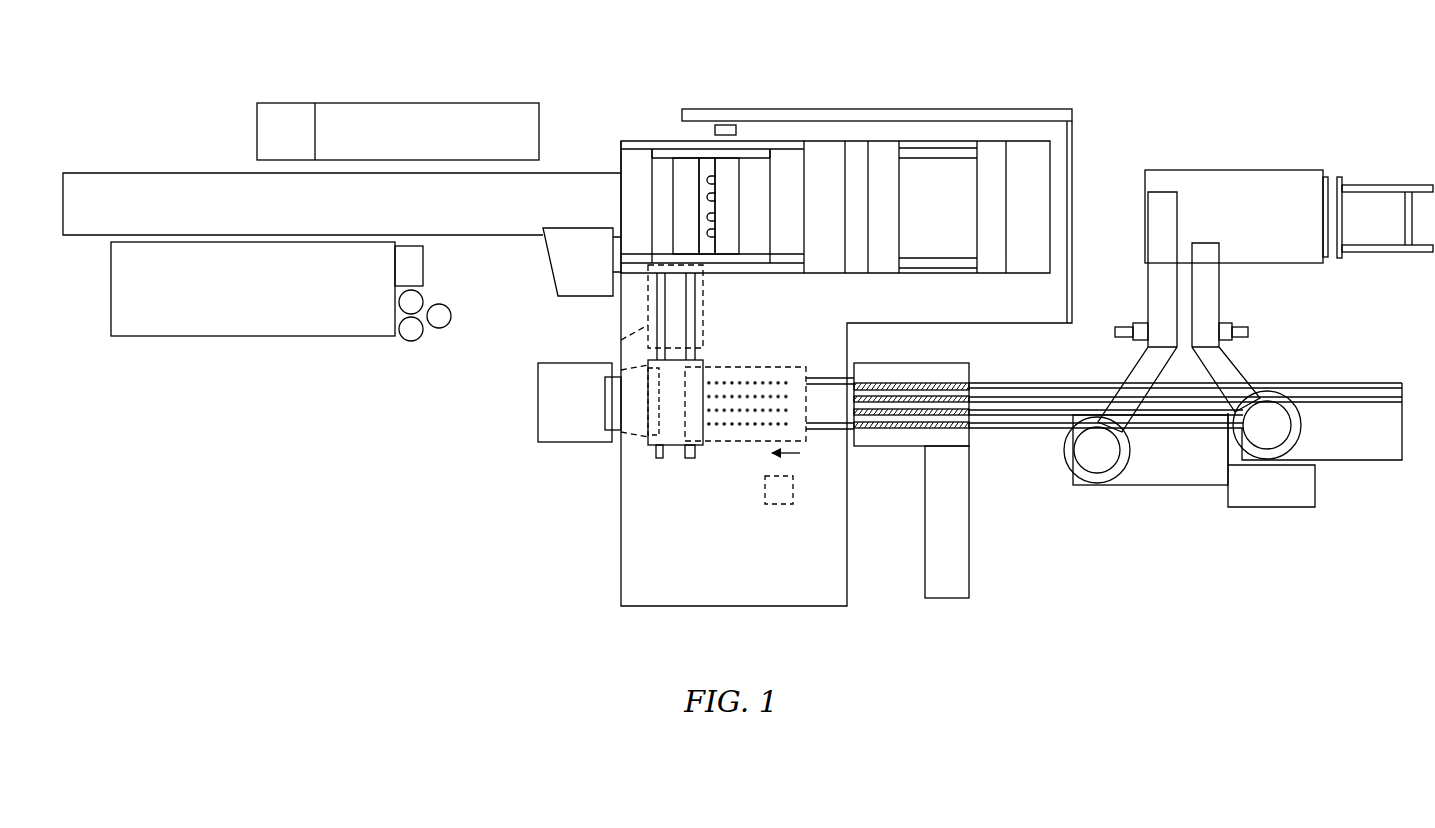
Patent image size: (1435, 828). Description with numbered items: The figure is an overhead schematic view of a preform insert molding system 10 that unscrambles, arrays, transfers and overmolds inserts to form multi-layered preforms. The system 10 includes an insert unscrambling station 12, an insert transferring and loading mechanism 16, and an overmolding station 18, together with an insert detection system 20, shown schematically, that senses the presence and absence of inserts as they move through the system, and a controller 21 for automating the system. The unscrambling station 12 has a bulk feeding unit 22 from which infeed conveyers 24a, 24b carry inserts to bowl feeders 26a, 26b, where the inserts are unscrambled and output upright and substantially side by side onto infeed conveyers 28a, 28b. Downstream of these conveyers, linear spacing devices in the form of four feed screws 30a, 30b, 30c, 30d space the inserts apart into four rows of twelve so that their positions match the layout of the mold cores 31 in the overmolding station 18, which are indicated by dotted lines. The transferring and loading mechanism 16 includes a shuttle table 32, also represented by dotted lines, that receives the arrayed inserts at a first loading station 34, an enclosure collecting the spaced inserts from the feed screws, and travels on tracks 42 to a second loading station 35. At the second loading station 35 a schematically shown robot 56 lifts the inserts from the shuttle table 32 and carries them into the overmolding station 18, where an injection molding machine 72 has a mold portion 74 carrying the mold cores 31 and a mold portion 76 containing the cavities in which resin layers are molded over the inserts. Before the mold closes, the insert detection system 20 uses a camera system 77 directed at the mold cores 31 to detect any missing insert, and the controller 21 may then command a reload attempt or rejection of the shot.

The preform insert molding system 10 is at (910, 72).
The insert unscrambling station 12 is at (1155, 160).
The insert transferring and loading mechanism 16 is at (660, 473).
The overmolding station 18 is at (602, 162).
The insert detection system 20 is at (718, 116).
The controller 21 is at (395, 103).
The bulk feeding unit 22 is at (1243, 169).
The infeed conveyer 24a is at (1148, 293).
The infeed conveyer 24b is at (1213, 297).
The bowl feeder 26a is at (1098, 482).
The bowl feeder 26b is at (1295, 440).
The infeed conveyer 28a is at (1193, 397).
The infeed conveyer 28b is at (1018, 418).
The feed screw 30a is at (910, 383).
The feed screw 30b is at (940, 398).
The feed screw 30c is at (883, 413).
The feed screw 30d is at (908, 427).
The mold cores 31 is at (710, 190).
The shuttle table 32 is at (752, 365).
The first loading station 34 is at (830, 442).
The second loading station 35 is at (698, 468).
The tracks 42 is at (832, 380).
The robot 56 is at (648, 360).
The injection molding machine 72 is at (685, 162).
The mold portion 74 is at (725, 245).
The mold portion 76 is at (680, 195).
The camera system 77 is at (728, 130).